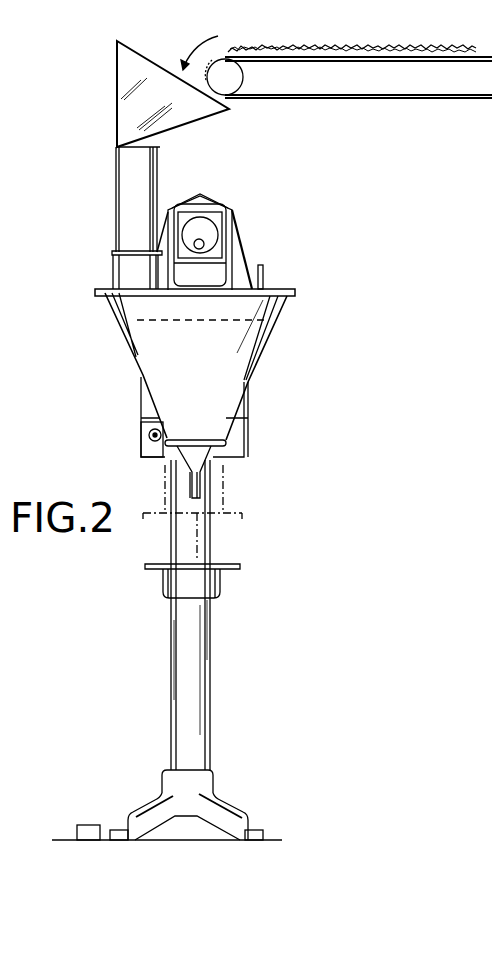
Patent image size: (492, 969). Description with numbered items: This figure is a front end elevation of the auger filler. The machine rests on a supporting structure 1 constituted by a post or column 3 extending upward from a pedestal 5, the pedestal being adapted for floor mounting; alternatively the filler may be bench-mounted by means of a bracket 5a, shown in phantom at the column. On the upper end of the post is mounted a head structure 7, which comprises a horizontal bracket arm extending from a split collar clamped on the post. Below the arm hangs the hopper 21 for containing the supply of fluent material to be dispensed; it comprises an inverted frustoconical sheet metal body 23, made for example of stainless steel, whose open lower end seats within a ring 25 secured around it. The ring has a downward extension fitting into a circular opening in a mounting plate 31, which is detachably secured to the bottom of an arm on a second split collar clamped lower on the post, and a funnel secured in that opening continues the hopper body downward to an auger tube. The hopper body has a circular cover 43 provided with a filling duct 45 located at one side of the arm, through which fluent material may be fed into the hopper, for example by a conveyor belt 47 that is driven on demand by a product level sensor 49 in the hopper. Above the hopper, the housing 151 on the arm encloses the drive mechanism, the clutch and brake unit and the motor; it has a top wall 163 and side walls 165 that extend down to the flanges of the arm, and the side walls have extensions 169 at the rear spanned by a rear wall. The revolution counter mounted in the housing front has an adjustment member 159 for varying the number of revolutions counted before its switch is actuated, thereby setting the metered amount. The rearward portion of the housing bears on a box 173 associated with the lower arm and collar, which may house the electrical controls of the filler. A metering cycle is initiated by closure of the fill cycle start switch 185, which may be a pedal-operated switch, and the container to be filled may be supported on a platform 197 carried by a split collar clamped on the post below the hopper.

The supporting structure 1 is at (167, 648).
The post or column 3 is at (210, 670).
The pedestal 5 is at (225, 806).
The bracket 5a is at (152, 514).
The head structure 7 is at (237, 188).
The hopper 21 is at (204, 366).
The inverted frustoconical sheet metal body 23 is at (134, 360).
The ring 25 is at (224, 443).
The mounting plate 31 is at (152, 457).
The circular cover 43 is at (95, 290).
The filling duct 45 is at (112, 252).
The conveyor belt 47 is at (318, 100).
The product level sensor 49 is at (263, 266).
The housing 151 is at (238, 210).
The adjustment member 159 is at (198, 249).
The top wall 163 is at (203, 212).
The side walls 165 is at (160, 252).
The extensions 169 is at (141, 398).
The box 173 is at (140, 433).
The fill cycle start switch 185 is at (82, 825).
The platform 197 is at (145, 566).